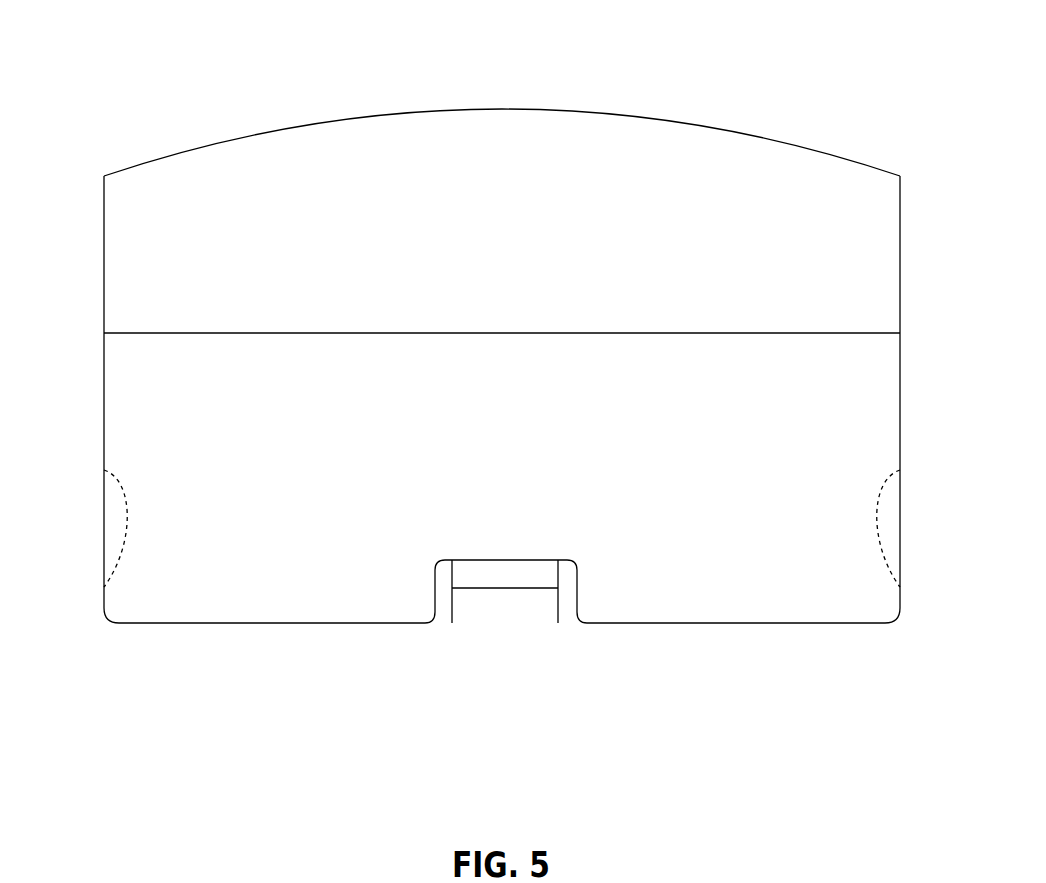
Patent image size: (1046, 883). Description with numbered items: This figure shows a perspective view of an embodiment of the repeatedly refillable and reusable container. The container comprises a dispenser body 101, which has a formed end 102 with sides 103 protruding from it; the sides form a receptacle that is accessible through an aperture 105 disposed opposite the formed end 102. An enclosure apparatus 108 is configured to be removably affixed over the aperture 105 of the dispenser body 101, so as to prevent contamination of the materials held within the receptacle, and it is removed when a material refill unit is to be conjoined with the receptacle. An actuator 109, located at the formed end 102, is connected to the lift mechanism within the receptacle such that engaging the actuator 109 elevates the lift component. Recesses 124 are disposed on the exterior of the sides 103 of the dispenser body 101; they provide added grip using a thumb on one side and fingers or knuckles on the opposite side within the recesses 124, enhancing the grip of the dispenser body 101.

The dispenser body 101 is at (860, 457).
The formed end 102 is at (267, 623).
The sides 103 is at (104, 400).
The aperture 105 is at (173, 331).
The enclosure apparatus 108 is at (457, 160).
The actuator 109 is at (517, 625).
The recesses 124 is at (120, 517).